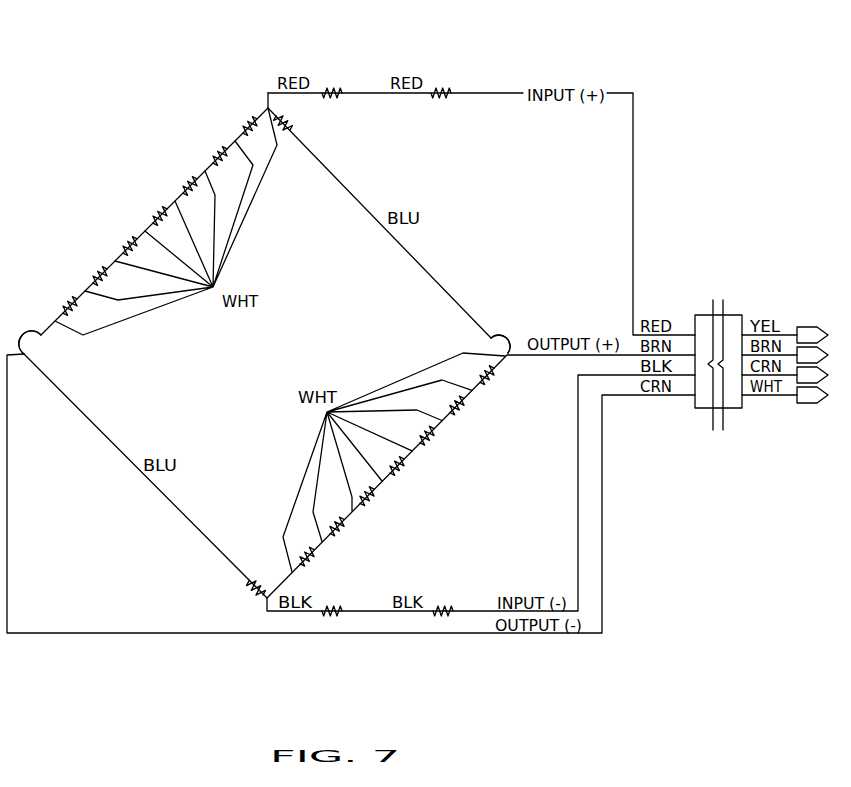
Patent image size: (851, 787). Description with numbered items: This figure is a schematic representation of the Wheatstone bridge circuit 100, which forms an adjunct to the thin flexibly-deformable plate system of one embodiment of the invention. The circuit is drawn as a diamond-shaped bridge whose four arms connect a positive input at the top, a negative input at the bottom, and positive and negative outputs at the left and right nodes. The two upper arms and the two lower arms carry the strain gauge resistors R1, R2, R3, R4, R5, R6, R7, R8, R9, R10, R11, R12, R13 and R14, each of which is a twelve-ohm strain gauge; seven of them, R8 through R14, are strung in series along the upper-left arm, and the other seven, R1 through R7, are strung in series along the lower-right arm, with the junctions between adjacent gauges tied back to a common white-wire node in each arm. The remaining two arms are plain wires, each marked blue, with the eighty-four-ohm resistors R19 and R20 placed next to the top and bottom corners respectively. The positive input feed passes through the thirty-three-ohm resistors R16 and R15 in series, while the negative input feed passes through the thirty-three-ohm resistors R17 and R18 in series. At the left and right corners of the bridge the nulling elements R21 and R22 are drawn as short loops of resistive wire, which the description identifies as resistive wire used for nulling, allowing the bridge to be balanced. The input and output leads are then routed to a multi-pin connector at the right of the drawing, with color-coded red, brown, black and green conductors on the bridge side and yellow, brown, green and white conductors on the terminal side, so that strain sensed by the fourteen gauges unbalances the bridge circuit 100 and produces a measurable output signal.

The Wheatstone bridge circuit 100 is at (353, 182).
The strain gauge resistor R1 is at (495, 387).
The strain gauge resistor R2 is at (466, 417).
The strain gauge resistor R3 is at (436, 447).
The strain gauge resistor R4 is at (406, 478).
The strain gauge resistor R5 is at (376, 507).
The strain gauge resistor R6 is at (347, 537).
The strain gauge resistor R7 is at (317, 568).
The strain gauge resistor R8 is at (240, 119).
The strain gauge resistor R9 is at (208, 149).
The strain gauge resistor R10 is at (178, 178).
The strain gauge resistor R11 is at (149, 208).
The strain gauge resistor R12 is at (120, 238).
The strain gauge resistor R13 is at (90, 268).
The strain gauge resistor R14 is at (61, 298).
The resistor R15 is at (475, 86).
The resistor R16 is at (347, 86).
The resistor R17 is at (349, 604).
The resistor R18 is at (458, 604).
The resistor R19 is at (299, 126).
The resistor R20 is at (239, 586).
The nulling resistive wire R21 is at (27, 333).
The nulling resistive wire R22 is at (496, 329).